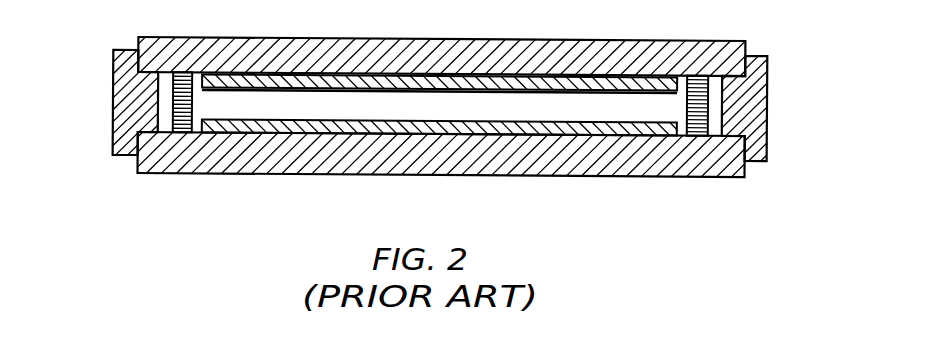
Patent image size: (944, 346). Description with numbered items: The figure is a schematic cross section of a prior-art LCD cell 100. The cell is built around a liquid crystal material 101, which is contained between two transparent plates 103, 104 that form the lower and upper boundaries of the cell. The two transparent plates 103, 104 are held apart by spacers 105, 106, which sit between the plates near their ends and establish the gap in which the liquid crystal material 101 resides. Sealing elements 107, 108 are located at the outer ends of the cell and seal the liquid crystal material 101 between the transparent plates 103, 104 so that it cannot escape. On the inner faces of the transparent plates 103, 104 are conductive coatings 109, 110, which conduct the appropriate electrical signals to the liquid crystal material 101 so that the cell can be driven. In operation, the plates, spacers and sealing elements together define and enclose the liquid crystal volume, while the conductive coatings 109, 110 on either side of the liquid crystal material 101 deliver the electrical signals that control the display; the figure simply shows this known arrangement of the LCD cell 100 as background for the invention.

The LCD cell 100 is at (437, 118).
The liquid crystal material 101 is at (383, 98).
The transparent plate 103 is at (432, 176).
The transparent plate 104 is at (510, 38).
The spacer 105 is at (687, 107).
The spacer 106 is at (198, 104).
The sealing element 107 is at (767, 163).
The sealing element 108 is at (113, 107).
The conductive coating 109 is at (361, 119).
The conductive coating 110 is at (575, 93).